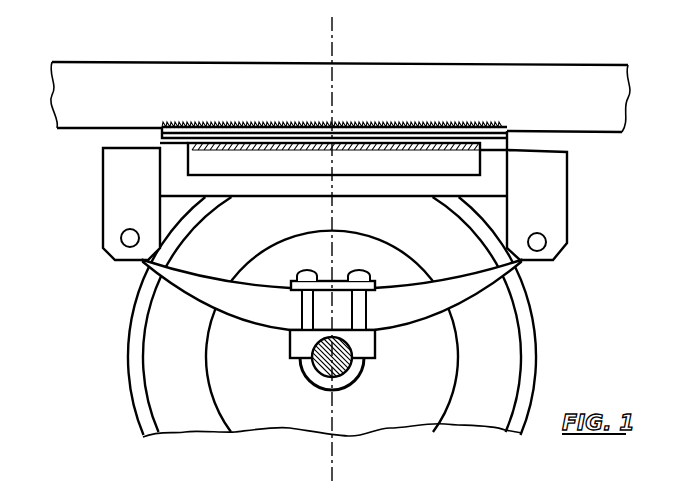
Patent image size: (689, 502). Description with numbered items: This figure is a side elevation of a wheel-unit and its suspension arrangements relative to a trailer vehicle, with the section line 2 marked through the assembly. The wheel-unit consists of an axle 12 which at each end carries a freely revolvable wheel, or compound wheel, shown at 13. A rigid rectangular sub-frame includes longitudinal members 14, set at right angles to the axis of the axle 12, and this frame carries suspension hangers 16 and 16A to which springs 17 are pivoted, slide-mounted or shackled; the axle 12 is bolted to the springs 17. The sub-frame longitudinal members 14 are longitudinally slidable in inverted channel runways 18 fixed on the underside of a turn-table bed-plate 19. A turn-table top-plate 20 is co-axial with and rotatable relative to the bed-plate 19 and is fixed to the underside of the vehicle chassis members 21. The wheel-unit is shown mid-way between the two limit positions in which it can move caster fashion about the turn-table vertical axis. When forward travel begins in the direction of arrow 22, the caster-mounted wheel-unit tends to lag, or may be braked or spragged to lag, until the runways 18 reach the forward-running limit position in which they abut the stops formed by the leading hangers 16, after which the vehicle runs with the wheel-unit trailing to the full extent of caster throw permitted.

The section line 2- 2 is at (375, 29).
The axle 12 is at (335, 372).
The wheel 13 is at (538, 338).
The longitudinal member 14 is at (270, 185).
The suspension hanger 16 is at (113, 177).
The suspension hanger 16A is at (557, 186).
The spring 17 is at (287, 318).
The inverted channel runway 18 is at (402, 163).
The turn-table bed-plate 19 is at (230, 137).
The turn-table top-plate 20 is at (187, 127).
The vehicle chassis member 21 is at (340, 106).
The arrow 22 is at (160, 357).